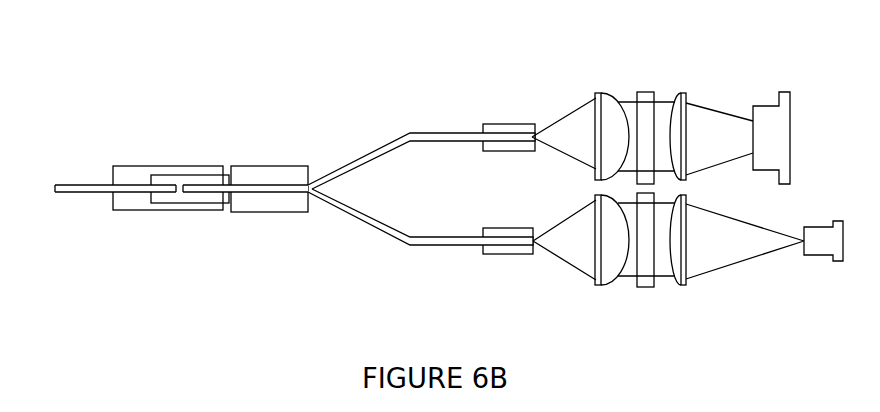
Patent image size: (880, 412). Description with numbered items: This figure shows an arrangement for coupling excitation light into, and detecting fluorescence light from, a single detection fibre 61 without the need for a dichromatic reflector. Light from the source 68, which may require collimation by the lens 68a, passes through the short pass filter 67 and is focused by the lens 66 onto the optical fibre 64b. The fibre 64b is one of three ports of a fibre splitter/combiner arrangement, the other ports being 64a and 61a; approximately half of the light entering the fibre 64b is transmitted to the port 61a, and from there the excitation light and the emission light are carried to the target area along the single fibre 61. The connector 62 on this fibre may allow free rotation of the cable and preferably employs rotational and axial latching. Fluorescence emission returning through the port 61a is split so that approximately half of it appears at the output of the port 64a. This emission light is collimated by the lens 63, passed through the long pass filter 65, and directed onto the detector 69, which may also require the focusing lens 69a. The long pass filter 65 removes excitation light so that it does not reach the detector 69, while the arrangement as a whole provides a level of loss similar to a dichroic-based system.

The single detection fibre 61 is at (75, 193).
The connector 62 is at (150, 210).
The port 61a is at (273, 193).
The port 64a is at (352, 152).
The optical fibre 64b is at (355, 222).
The lens 63 is at (600, 93).
The long pass filter 65 is at (647, 92).
The focusing lens 69a is at (684, 92).
The detector 69 is at (784, 92).
The lens 66 is at (599, 284).
The short pass filter 67 is at (645, 288).
The lens 68a is at (684, 286).
The source 68 is at (820, 256).